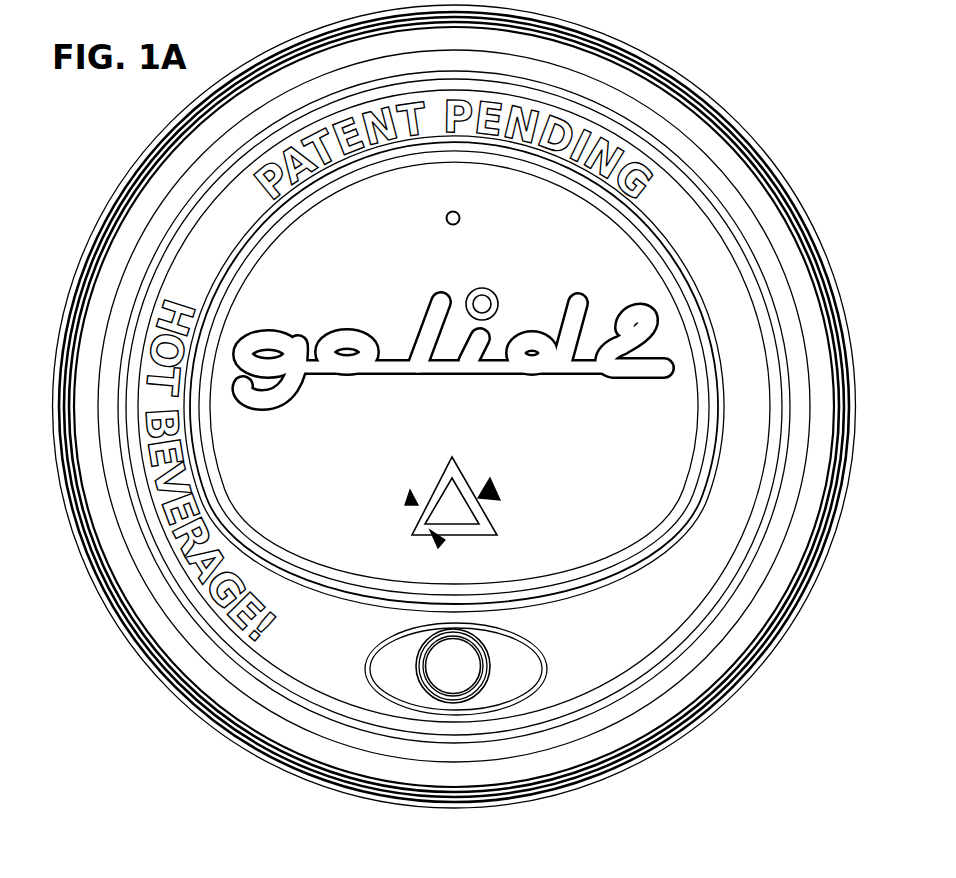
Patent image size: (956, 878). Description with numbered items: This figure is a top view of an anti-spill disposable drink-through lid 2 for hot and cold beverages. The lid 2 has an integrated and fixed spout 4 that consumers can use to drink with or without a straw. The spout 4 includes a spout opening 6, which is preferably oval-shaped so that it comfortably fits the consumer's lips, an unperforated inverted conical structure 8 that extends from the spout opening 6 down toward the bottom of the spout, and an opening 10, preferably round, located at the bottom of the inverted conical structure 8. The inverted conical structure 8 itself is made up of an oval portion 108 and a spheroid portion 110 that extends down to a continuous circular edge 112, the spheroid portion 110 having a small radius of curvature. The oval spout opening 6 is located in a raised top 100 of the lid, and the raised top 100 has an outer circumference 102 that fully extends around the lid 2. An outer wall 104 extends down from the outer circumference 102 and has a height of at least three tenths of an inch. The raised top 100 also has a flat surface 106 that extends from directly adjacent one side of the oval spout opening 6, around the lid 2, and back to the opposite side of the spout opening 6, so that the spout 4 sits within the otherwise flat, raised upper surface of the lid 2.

The anti-spill disposable drink-through lid 2 is at (816, 46).
The integrated spout 4 is at (578, 681).
The spout opening 6 is at (370, 695).
The inverted conical structure 8 is at (354, 665).
The opening 10 is at (462, 667).
The raised top 100 is at (675, 628).
The outer circumference 102 is at (688, 195).
The outer wall 104 is at (160, 597).
The flat surface 106 is at (228, 218).
The oval portion 108 is at (385, 648).
The spheroid portion 110 is at (427, 633).
The continuous circular edge 112 is at (448, 640).